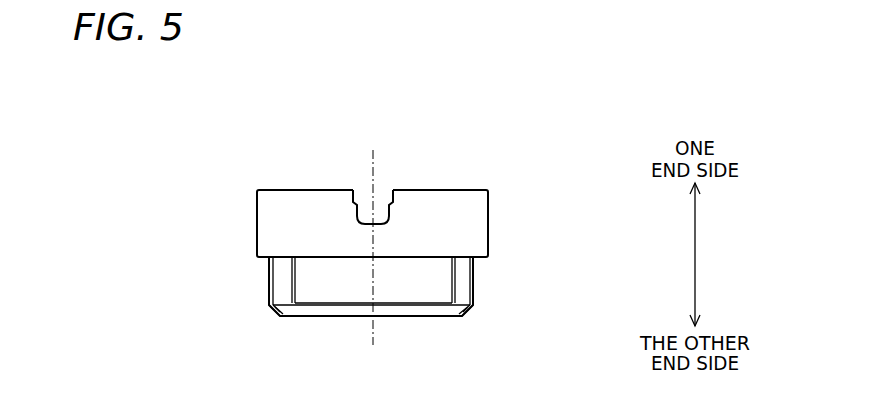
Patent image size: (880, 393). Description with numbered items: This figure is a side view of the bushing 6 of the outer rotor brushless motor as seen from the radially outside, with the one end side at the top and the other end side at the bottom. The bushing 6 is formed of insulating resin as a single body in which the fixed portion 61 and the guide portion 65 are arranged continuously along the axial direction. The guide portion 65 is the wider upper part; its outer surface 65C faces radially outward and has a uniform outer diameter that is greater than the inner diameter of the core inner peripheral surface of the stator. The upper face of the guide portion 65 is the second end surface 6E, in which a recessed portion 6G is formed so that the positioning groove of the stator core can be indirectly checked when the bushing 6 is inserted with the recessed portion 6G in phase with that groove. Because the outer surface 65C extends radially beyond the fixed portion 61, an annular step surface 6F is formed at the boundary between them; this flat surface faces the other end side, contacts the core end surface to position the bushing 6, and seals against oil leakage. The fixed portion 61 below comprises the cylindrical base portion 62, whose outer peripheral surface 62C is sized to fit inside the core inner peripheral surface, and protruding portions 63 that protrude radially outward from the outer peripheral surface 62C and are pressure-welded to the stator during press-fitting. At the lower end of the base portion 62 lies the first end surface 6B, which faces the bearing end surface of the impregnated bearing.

The bushing 6 is at (232, 118).
The guide portion 65 is at (254, 204).
The outer surface 65C is at (337, 233).
The recessed portion 6G is at (381, 216).
The second end surface 6E is at (468, 190).
The step surface 6F is at (476, 265).
The fixed portion 61 is at (253, 297).
The base portion 62 is at (320, 308).
The outer peripheral surface 62C is at (432, 294).
The protruding portion 63 is at (278, 312).
The first end surface 6B is at (430, 318).